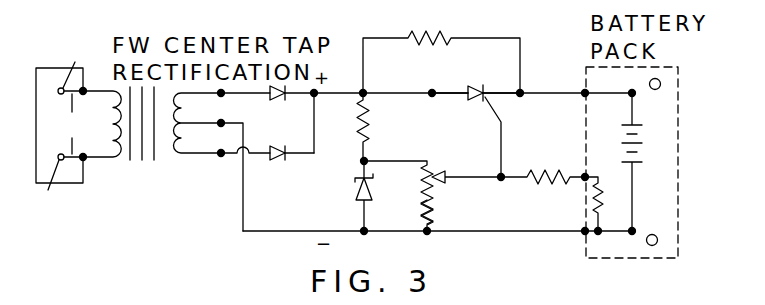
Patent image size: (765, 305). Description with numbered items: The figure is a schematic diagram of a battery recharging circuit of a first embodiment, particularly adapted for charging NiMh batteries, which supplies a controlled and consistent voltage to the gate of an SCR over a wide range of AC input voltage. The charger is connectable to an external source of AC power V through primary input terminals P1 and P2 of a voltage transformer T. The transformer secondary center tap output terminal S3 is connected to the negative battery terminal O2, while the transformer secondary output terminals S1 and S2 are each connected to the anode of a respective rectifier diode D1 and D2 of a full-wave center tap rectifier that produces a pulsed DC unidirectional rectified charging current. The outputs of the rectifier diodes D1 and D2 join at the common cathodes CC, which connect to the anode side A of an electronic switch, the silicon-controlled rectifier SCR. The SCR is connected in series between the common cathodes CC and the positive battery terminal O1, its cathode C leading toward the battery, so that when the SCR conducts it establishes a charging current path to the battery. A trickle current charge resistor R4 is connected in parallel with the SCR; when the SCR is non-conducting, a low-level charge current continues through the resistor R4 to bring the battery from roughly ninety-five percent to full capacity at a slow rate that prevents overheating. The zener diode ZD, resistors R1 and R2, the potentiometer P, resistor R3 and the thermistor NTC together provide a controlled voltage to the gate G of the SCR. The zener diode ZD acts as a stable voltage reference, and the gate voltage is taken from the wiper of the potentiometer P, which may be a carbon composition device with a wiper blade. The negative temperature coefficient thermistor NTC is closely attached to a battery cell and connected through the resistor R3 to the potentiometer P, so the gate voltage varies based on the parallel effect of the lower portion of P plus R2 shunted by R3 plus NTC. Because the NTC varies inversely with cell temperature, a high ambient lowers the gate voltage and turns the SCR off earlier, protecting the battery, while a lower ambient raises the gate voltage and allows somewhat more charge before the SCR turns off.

The primary input terminal P1 is at (75, 62).
The primary input terminal P2 is at (48, 190).
The external source of AC power V is at (71, 124).
The voltage transformer T is at (152, 137).
The transformer secondary output terminal S1 is at (224, 96).
The transformer secondary output terminal S2 is at (221, 157).
The transformer secondary center tap output terminal S3 is at (219, 126).
The rectifier diode D1 is at (279, 100).
The rectifier diode D2 is at (286, 160).
The common cathodes CC is at (316, 110).
The resistor R1 is at (381, 127).
The resistor R2 is at (444, 217).
The resistor R3 is at (545, 165).
The trickle current charge resistor R4 is at (441, 50).
The zener diode ZD is at (345, 196).
The potentiometer P is at (433, 196).
The silicon-controlled rectifier SCR is at (470, 76).
The anode side of the SCR A is at (448, 80).
The cathode of the SCR C is at (519, 90).
The gate of the SCR G is at (484, 102).
The negative temperature coefficient thermistor NTC is at (601, 194).
The positive battery terminal O1 is at (636, 91).
The negative battery terminal O2 is at (636, 232).